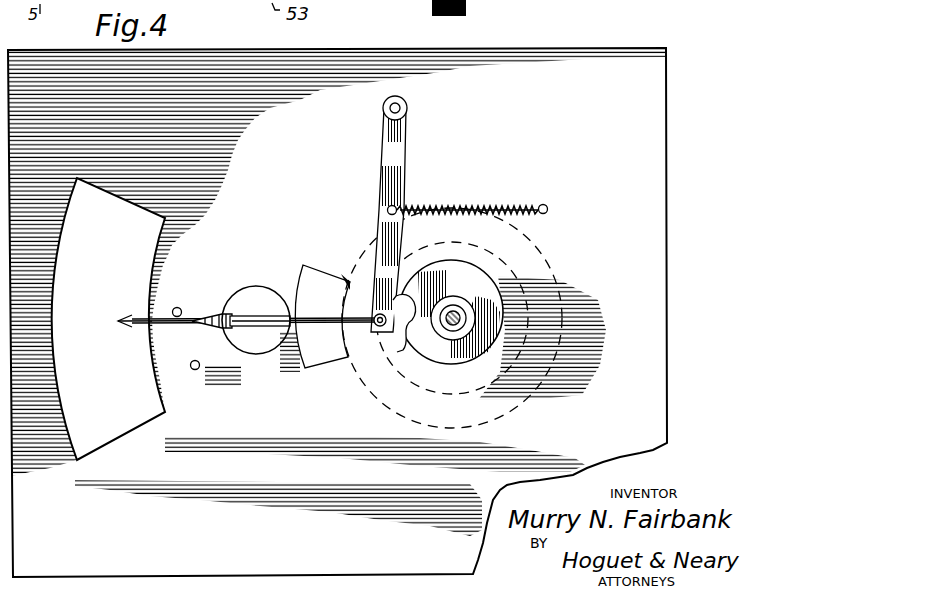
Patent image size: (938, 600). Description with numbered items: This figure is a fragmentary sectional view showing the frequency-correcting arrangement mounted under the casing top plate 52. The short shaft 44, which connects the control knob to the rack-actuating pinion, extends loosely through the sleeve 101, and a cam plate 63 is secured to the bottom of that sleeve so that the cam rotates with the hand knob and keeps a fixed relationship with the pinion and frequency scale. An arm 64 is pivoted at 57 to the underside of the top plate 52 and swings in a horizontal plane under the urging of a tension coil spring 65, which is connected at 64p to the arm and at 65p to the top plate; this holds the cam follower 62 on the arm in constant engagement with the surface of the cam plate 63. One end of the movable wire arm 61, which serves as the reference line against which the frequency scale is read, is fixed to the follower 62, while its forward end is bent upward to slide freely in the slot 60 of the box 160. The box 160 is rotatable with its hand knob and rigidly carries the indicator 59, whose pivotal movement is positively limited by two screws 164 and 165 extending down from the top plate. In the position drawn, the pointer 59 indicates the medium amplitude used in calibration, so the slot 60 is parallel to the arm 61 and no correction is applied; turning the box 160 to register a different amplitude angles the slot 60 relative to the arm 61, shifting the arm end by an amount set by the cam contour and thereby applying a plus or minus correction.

The casing top plate 52 is at (640, 138).
The pivot 57 is at (405, 100).
The arm 64 is at (405, 140).
The spring connection on arm 64p is at (396, 208).
The tension coil spring 65 is at (524, 206).
The spring connection on top plate 65p is at (549, 211).
The short shaft 44 is at (456, 316).
The sleeve 101 is at (475, 312).
The cam plate 63 is at (404, 350).
The cam follower 62 is at (382, 333).
The movable wire arm 61 is at (316, 300).
The indicator 59 is at (162, 323).
The slot 60 is at (238, 318).
The box 160 is at (266, 292).
The screw 164 is at (180, 308).
The screw 165 is at (192, 370).